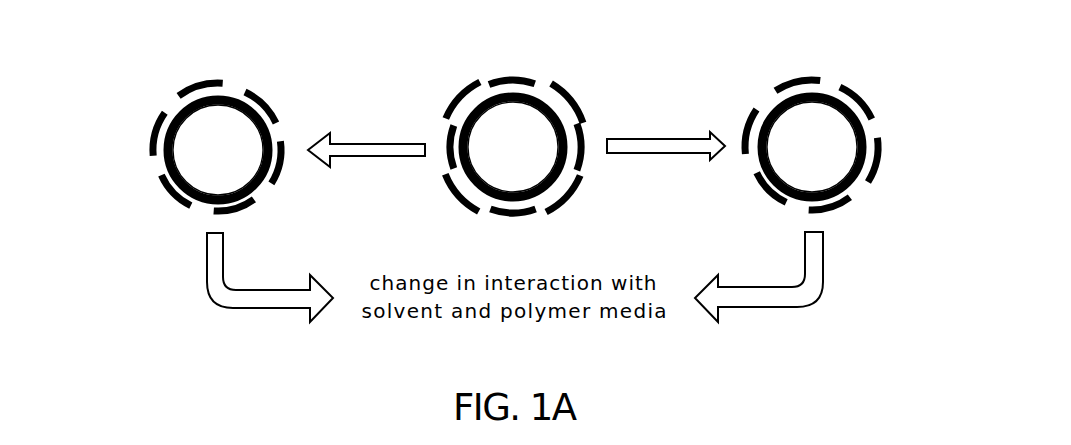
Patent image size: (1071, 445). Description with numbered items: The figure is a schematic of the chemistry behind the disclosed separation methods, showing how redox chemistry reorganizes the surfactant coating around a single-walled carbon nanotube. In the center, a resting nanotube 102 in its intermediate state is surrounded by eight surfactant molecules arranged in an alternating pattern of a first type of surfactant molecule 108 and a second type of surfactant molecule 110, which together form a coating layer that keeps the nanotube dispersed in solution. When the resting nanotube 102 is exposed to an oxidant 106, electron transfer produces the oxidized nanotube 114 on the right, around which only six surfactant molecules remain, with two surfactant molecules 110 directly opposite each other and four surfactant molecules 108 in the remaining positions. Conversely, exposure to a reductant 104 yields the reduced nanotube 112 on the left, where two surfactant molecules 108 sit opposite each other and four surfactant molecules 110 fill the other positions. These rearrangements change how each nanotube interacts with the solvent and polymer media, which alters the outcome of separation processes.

The resting nanotube 102 is at (535, 186).
The reductant 104 is at (378, 104).
The oxidant 106 is at (632, 103).
The first type of surfactant molecule 108 is at (270, 100).
The second type of surfactant molecule 110 is at (195, 80).
The reduced nanotube 112 is at (235, 186).
The oxidized nanotube 114 is at (827, 186).